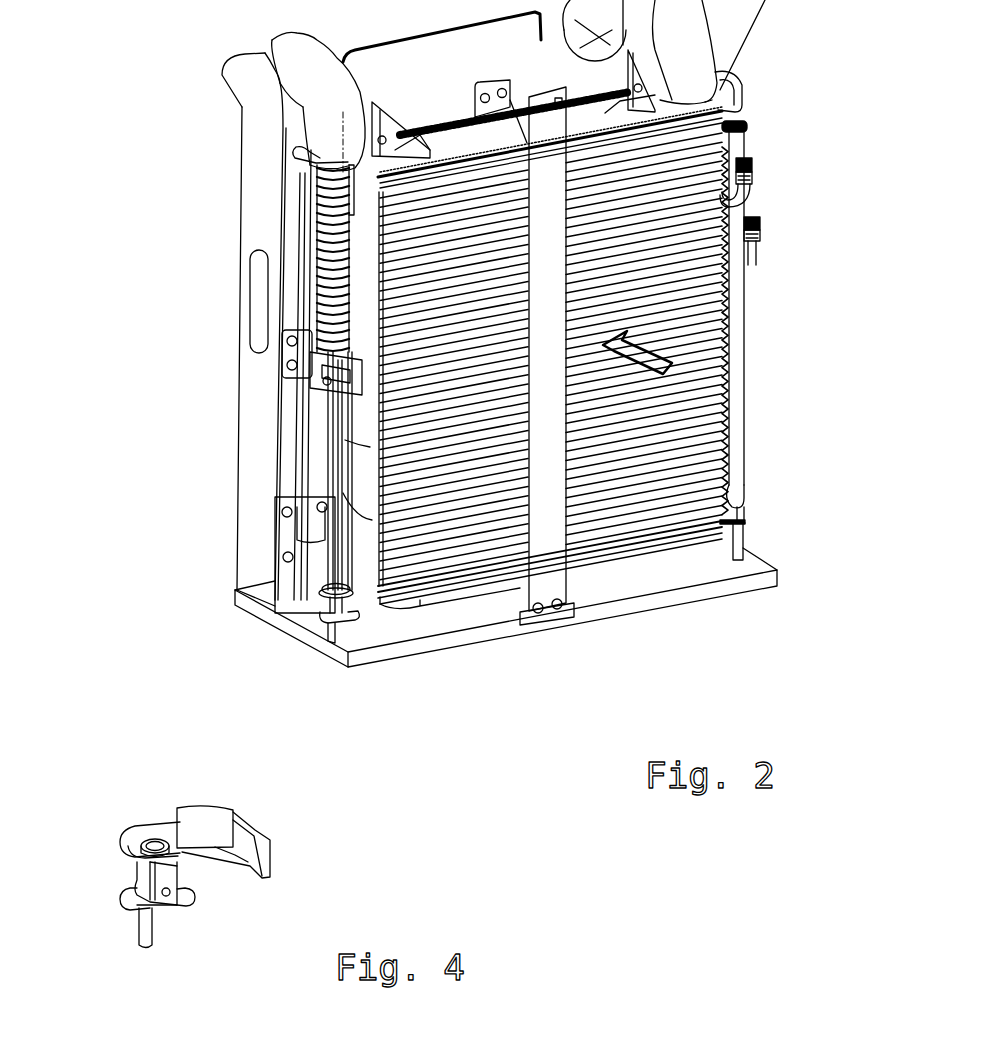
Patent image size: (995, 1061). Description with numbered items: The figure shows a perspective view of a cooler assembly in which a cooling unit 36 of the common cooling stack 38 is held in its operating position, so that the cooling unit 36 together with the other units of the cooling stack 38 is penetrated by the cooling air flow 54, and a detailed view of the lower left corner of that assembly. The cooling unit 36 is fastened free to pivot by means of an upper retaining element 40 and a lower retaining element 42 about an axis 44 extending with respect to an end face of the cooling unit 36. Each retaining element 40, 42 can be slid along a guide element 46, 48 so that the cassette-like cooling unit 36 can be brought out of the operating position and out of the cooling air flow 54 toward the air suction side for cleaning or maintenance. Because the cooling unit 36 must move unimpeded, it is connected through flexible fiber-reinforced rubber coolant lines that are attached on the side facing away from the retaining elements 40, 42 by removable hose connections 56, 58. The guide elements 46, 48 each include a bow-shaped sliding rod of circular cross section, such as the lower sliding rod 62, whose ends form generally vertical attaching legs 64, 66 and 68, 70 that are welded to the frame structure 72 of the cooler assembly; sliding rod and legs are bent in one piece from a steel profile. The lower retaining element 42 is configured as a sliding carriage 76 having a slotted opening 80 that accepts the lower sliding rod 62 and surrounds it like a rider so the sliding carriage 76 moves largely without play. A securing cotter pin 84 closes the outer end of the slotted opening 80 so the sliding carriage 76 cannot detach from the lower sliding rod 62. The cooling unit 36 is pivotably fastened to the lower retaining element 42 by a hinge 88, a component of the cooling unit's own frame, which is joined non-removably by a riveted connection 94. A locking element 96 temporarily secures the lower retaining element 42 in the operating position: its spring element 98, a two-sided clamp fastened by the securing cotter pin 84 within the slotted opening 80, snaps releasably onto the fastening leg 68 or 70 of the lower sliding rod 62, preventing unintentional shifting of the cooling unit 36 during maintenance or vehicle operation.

In FIG. 2, the cooling unit 36 is at (690, 355).
In FIG. 2, the cooling stack 38 is at (310, 572).
In FIG. 2, the upper retaining element 40 is at (312, 197).
In FIG. 2, the lower retaining element 42 is at (358, 614).
In FIG. 2, the axis 44 is at (313, 117).
In FIG. 2, the upper guide element 46 is at (753, 82).
In FIG. 2, the lower guide element 48 is at (758, 520).
In FIG. 2, the cooling air flow 54 is at (655, 366).
In FIG. 2, the hose connection 56 is at (752, 174).
In FIG. 2, the hose connection 58 is at (760, 232).
In FIG. 2, the lower sliding rod 62 is at (633, 540).
In FIG. 4, the lower sliding rod 62 is at (233, 848).
In FIG. 2, the attaching leg 64 is at (743, 107).
In FIG. 2, the attaching leg 66 is at (313, 160).
In FIG. 2, the attaching leg 68 is at (742, 550).
In FIG. 2, the attaching leg 70 is at (334, 642).
In FIG. 4, the attaching leg 70 is at (145, 947).
In FIG. 2, the frame structure 72 is at (257, 443).
In FIG. 4, the sliding carriage 76 is at (173, 870).
In FIG. 4, the slotted opening 80 is at (147, 877).
In FIG. 4, the securing cotter pin 84 is at (167, 895).
In FIG. 4, the hinge 88 is at (140, 830).
In FIG. 4, the riveted connection 94 is at (155, 847).
In FIG. 4, the locking element 96 is at (160, 930).
In FIG. 4, the spring element 98 is at (133, 917).